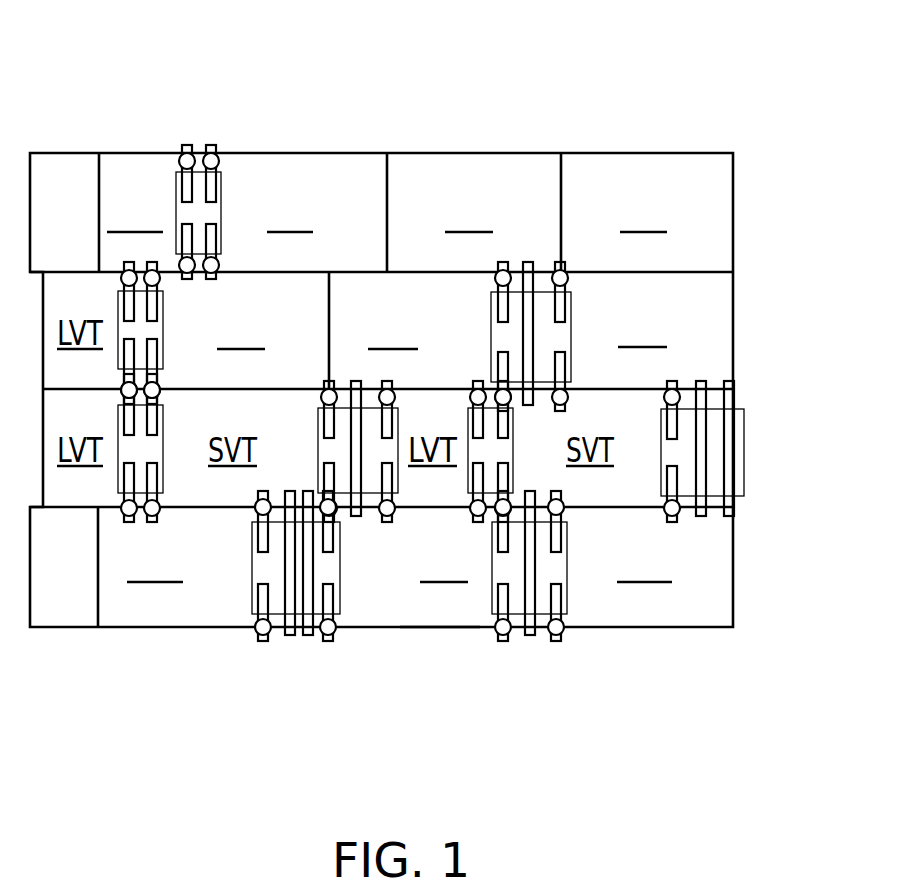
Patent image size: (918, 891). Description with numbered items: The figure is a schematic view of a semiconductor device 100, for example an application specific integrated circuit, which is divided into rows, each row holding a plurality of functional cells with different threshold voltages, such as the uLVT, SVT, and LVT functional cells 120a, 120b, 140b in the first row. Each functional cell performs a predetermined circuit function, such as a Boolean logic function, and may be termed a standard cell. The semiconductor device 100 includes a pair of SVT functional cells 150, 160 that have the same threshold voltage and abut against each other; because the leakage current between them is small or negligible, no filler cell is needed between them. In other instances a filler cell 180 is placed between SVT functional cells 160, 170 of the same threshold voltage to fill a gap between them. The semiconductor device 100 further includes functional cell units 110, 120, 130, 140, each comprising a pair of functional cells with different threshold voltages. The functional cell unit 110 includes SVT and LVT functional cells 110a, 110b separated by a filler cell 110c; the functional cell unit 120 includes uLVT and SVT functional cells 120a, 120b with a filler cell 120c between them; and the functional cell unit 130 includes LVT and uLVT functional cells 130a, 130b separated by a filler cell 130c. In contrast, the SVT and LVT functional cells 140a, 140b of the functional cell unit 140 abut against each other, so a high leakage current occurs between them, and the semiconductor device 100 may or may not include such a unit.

The semiconductor device 100 is at (788, 789).
The functional cell unit 110 is at (403, 720).
The SVT functional cell 110a is at (219, 489).
The LVT functional cell 110b is at (415, 492).
The filler cell 110c is at (385, 500).
The functional cell unit 120 is at (298, 65).
The uLVT functional cell 120a is at (122, 165).
The SVT functional cell 120b is at (275, 165).
The filler cell 120c is at (200, 160).
The functional cell unit 130 is at (665, 720).
The LVT functional cell 130a is at (443, 615).
The uLVT functional cell 130b is at (630, 615).
The filler cell 130c is at (517, 625).
The functional cell unit 140 is at (657, 68).
The SVT functional cell 140a is at (472, 163).
The LVT functional cell 140b is at (642, 163).
The SVT functional cell 150 is at (313, 290).
The SVT functional cell 160 is at (416, 290).
The SVT functional cell 170 is at (718, 357).
The filler cell 180 is at (571, 300).